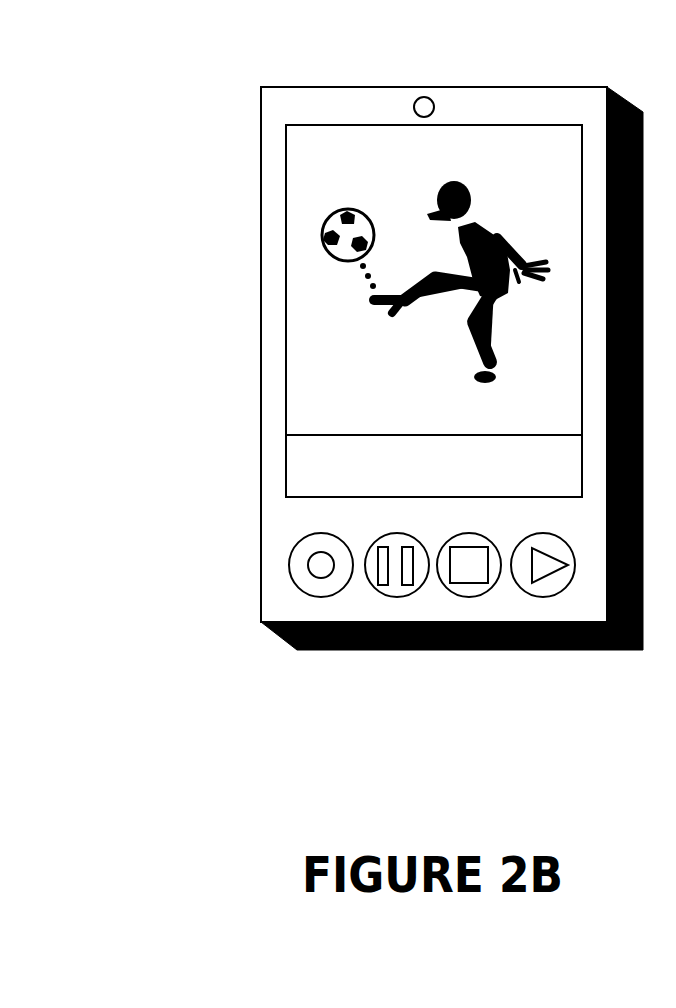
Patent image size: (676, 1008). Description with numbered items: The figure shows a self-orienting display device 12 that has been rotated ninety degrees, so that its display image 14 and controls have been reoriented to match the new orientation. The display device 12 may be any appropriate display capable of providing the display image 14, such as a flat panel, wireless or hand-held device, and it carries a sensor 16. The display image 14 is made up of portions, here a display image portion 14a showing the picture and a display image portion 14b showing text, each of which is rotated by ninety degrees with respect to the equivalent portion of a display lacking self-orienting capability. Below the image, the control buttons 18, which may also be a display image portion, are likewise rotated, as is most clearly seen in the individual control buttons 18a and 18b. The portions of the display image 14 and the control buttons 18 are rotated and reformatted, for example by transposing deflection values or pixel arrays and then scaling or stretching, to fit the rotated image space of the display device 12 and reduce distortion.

The display device 12 is at (259, 148).
The display image 14 is at (310, 305).
The display image portion 14a is at (310, 397).
The display image portion 14b is at (297, 447).
The sensor 16 is at (428, 103).
The control buttons 18 is at (424, 626).
The control button 18a is at (395, 585).
The control button 18b is at (557, 585).